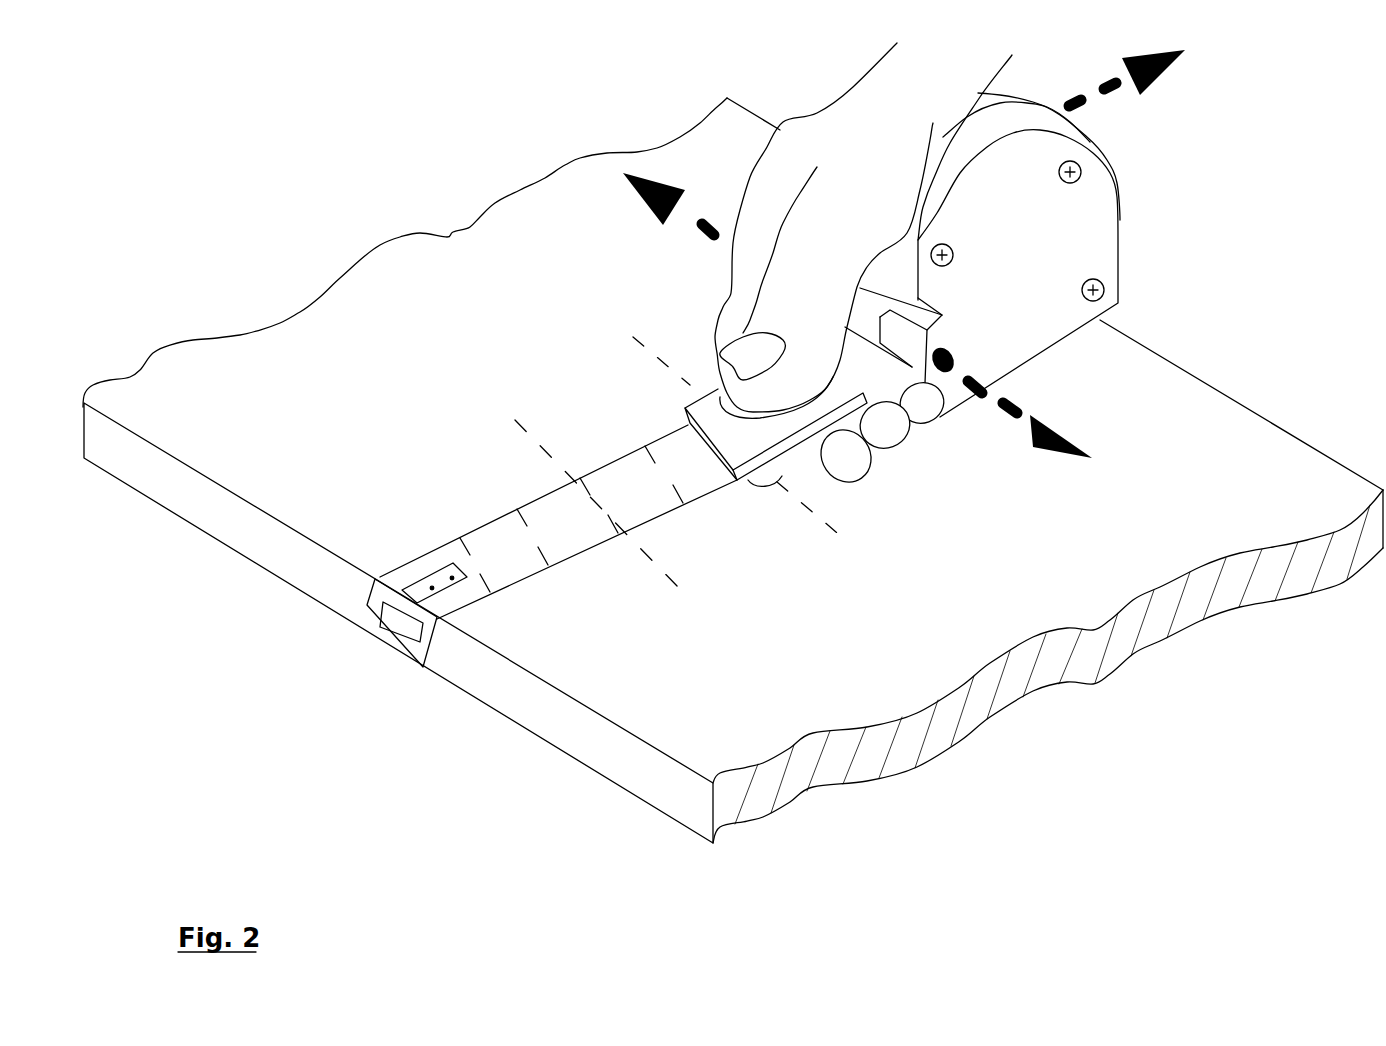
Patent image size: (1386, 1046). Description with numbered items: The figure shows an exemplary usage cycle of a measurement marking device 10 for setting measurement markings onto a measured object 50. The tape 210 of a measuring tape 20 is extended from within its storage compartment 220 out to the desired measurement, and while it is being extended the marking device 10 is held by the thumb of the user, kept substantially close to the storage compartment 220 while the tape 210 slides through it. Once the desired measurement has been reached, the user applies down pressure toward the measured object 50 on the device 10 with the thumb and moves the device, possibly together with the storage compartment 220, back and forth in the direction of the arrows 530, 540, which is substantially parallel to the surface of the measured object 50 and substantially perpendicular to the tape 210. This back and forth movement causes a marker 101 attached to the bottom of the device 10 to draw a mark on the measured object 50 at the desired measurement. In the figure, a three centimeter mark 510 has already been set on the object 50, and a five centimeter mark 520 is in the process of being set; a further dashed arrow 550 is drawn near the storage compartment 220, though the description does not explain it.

The measurement marking device 10 is at (703, 388).
The measuring tape 20 is at (1160, 263).
The measured object 50 is at (1117, 550).
The marker 101 is at (758, 485).
The tape 210 is at (543, 560).
The storage compartment 220 is at (1063, 310).
The 3 centimeter mark 510 is at (494, 443).
The 5 centimeter mark 520 is at (627, 369).
The arrow 530 is at (694, 255).
The arrow 540 is at (1029, 454).
The direction of movement 550 is at (1169, 118).